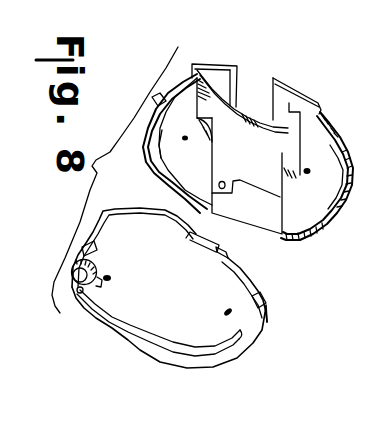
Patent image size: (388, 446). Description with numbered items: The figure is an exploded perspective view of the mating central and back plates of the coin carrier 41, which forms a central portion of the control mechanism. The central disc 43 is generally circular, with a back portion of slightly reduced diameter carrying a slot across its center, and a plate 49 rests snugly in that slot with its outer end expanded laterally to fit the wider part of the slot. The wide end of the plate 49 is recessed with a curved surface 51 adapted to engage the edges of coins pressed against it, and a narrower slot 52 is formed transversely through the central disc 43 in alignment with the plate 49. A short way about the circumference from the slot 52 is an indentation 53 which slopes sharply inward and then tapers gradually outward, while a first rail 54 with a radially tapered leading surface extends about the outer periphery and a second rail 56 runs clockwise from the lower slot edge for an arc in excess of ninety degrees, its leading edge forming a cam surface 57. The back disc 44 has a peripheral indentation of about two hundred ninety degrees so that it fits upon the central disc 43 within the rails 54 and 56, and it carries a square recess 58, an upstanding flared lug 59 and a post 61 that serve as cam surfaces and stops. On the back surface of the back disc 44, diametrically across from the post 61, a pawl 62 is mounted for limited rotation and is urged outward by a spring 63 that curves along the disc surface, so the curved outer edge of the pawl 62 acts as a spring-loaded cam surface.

The coin carrier 41 is at (188, 196).
The central disc 43 is at (248, 179).
The back disc 44 is at (180, 291).
The plate 49 is at (259, 156).
The curved surface 51 is at (253, 104).
The slot 52 is at (221, 65).
The indentation 53 is at (343, 125).
The first rail 54 is at (304, 255).
The second rail 56 is at (151, 165).
The cam surface 57 is at (170, 265).
The square recess 58 is at (102, 252).
The lug 59 is at (197, 253).
The post 61 is at (243, 289).
The pawl 62 is at (110, 287).
The spring 63 is at (159, 323).